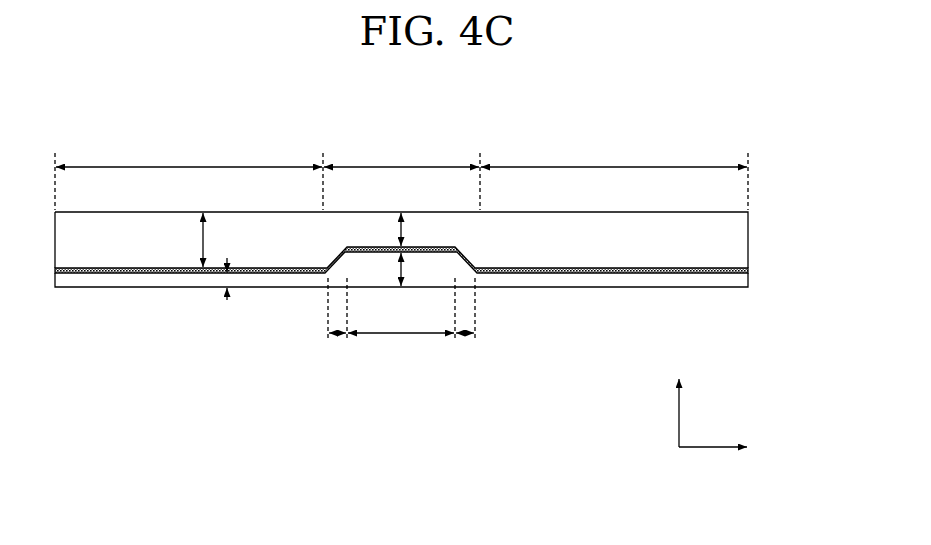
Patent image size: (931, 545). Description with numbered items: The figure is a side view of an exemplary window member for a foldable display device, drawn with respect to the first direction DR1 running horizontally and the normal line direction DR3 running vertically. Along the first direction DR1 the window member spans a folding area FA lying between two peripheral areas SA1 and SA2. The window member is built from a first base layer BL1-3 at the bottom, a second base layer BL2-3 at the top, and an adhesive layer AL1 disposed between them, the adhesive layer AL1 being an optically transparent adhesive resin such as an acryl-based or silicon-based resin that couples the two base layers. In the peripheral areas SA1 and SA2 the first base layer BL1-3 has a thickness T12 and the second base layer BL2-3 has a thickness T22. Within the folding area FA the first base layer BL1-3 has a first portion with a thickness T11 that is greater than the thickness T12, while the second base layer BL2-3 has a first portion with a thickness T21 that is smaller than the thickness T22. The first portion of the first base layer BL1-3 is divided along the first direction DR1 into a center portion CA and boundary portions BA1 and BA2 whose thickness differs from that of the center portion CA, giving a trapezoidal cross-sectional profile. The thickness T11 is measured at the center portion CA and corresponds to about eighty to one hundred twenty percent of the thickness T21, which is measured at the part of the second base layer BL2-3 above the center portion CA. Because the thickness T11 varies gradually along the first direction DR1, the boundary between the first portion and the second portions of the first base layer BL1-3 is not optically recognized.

The peripheral area SA1 is at (189, 155).
The folding area FA is at (401, 155).
The peripheral area SA2 is at (614, 155).
The thickness of second portions of second base layer T22 is at (222, 240).
The thickness of second portions of first base layer T12 is at (228, 291).
The thickness of first portion of second base layer T21 is at (420, 229).
The thickness of first portion of first base layer T11 is at (420, 269).
The boundary portion BA1 is at (340, 350).
The center portion CA is at (401, 347).
The boundary portion BA2 is at (464, 350).
The second base layer BL2-3 is at (748, 236).
The adhesive layer AL1 is at (748, 270).
The first base layer BL1-3 is at (748, 282).
The normal line direction DR3 is at (682, 401).
The first direction DR1 is at (734, 446).